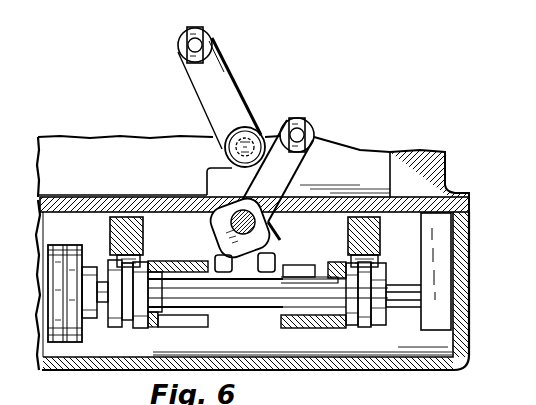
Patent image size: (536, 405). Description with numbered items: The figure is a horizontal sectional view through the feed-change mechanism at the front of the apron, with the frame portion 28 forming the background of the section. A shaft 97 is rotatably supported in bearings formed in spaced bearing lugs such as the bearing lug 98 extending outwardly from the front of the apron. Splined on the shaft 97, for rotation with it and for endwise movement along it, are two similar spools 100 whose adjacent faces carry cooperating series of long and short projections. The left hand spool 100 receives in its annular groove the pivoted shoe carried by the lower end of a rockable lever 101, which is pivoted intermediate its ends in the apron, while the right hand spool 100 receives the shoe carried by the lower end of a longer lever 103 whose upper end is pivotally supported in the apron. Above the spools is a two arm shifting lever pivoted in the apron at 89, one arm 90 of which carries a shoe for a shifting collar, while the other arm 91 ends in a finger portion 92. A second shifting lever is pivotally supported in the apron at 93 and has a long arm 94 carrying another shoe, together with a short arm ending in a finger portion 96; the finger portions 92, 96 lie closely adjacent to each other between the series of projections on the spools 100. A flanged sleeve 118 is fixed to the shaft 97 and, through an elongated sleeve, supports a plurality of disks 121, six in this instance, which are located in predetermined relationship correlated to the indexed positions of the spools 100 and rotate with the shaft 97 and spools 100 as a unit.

The frame block 28 is at (128, 196).
The pivot of two arm shifting lever 89 is at (248, 134).
The arm 90 is at (226, 86).
The arm 91 is at (279, 238).
The finger portion 92 is at (276, 264).
The pivot of shifting lever 93 is at (222, 216).
The long arm 94 is at (288, 172).
The finger portion 96 is at (215, 258).
The shaft 97 is at (250, 304).
The bearing lug 98 is at (438, 263).
The spool 100 is at (143, 323).
The rockable lever 101 is at (110, 233).
The longer lever 103 is at (375, 243).
The flanged sleeve 118 is at (72, 308).
The disk 121 is at (62, 244).